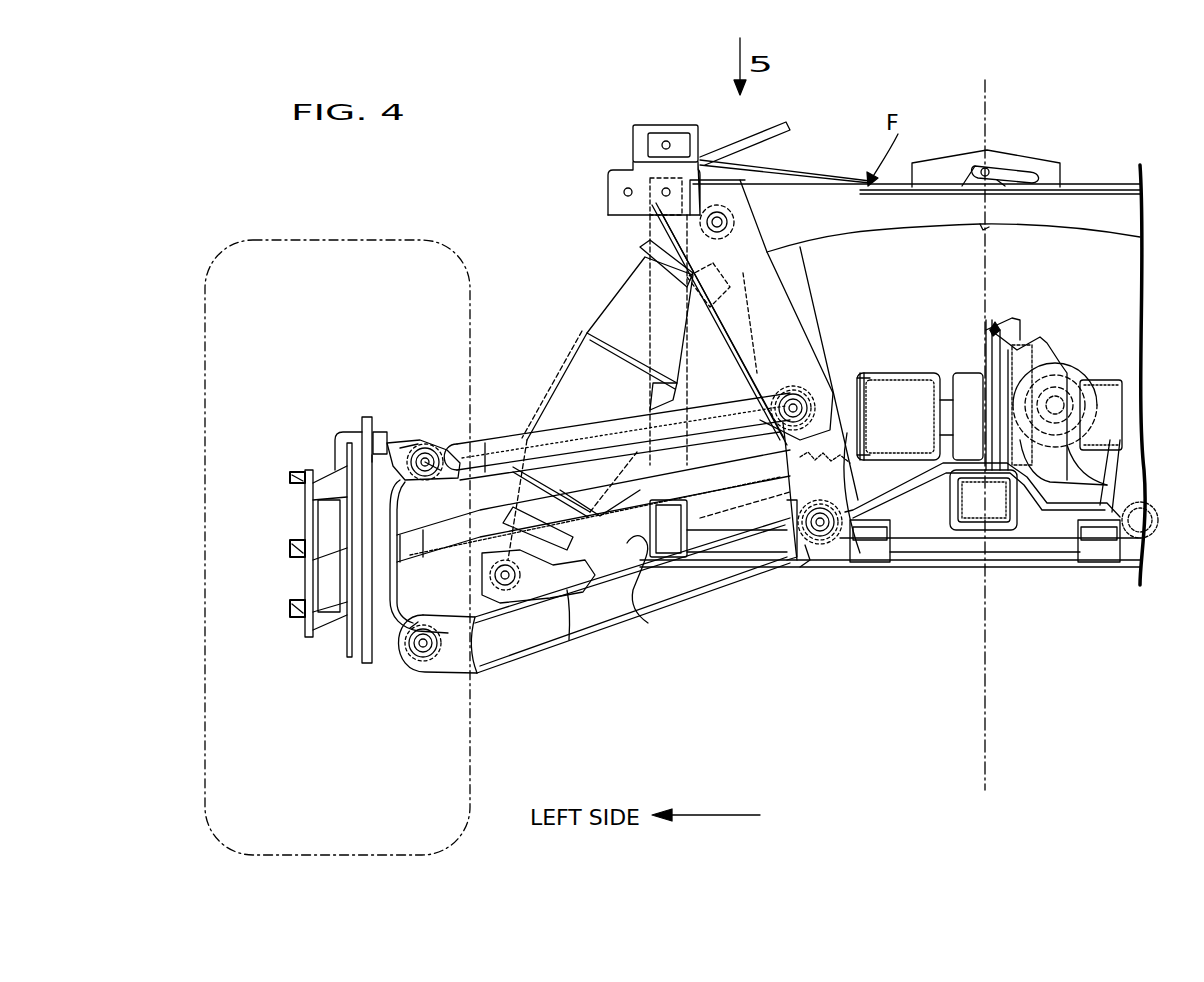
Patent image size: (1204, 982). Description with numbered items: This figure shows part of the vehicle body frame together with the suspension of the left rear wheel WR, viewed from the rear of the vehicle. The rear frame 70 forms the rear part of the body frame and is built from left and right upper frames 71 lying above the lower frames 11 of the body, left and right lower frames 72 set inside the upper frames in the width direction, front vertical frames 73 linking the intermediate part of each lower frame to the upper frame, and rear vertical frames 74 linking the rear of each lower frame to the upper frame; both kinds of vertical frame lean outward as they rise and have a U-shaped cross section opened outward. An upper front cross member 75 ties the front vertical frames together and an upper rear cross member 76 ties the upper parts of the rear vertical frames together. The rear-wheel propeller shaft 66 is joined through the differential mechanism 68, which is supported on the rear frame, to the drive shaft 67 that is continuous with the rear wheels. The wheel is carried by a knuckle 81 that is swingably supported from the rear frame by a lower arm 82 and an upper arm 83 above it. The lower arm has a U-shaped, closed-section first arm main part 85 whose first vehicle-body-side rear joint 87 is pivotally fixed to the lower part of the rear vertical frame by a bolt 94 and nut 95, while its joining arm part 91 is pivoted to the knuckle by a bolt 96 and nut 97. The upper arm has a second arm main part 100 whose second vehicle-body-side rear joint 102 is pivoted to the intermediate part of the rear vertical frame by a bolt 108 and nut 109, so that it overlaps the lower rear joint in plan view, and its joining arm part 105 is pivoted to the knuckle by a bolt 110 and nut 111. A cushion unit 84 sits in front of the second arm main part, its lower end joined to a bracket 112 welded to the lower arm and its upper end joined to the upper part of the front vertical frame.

The rear wheel WR is at (402, 238).
The lower frame 11 is at (648, 623).
The rear-wheel propeller shaft 66 is at (1062, 366).
The drive shaft 67 is at (599, 512).
The differential mechanism 68 is at (1022, 338).
The rear frame 70 is at (936, 578).
The upper frame 71 is at (655, 142).
The lower frame 72 is at (866, 548).
The front vertical frame 73 is at (816, 258).
The rear vertical frame 74 is at (789, 300).
The upper front cross member 75 is at (798, 181).
The upper rear cross member 76 is at (1096, 197).
The knuckle 81 is at (342, 612).
The lower arm 82 is at (601, 645).
The upper arm 83 is at (557, 412).
The cushion unit 84 is at (588, 347).
The first arm main part 85 is at (698, 590).
The first vehicle-body-side rear joint 87 is at (836, 512).
The joining arm part 91 is at (440, 678).
The bolt 94 is at (855, 452).
The nut 95 is at (815, 547).
The bolt 96 is at (430, 625).
The nut 97 is at (415, 662).
The second arm main part 100 is at (505, 443).
The second vehicle-body-side rear joint 102 is at (826, 388).
The joining arm part 105 is at (432, 442).
The bolt 108 is at (802, 486).
The nut 109 is at (778, 402).
The bolt 110 is at (436, 478).
The nut 111 is at (406, 442).
The bracket 112 is at (545, 572).